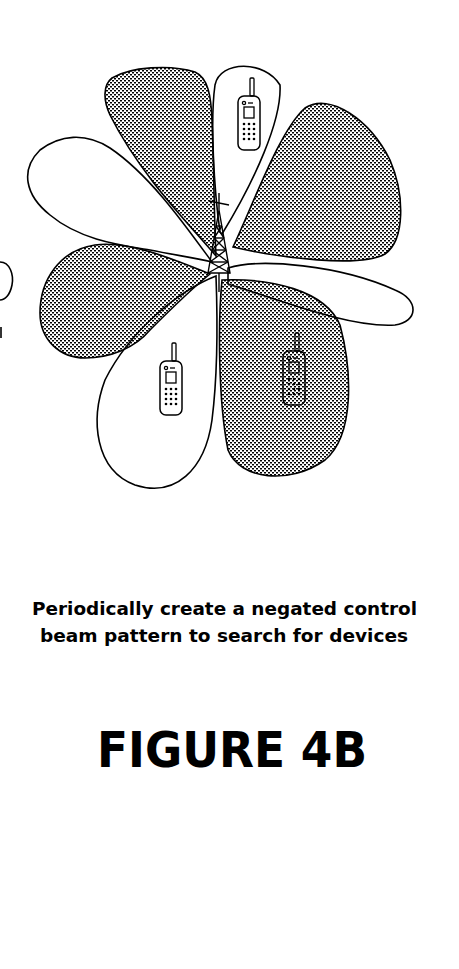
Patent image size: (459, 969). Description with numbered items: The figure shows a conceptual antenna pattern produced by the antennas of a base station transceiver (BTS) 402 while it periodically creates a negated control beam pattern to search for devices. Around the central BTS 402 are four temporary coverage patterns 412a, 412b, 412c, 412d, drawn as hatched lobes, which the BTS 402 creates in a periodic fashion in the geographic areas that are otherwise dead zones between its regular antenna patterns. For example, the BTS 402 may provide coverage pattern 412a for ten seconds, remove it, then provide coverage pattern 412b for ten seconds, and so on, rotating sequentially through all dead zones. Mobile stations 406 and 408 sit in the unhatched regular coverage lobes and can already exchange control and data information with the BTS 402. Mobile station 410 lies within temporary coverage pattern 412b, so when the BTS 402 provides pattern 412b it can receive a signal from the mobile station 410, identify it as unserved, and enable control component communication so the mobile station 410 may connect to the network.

The base station transceiver (BTS) 402 is at (233, 248).
The mobile station 406 is at (160, 407).
The mobile station 408 is at (260, 107).
The mobile station 410 is at (283, 400).
The temporary coverage pattern 412a is at (363, 118).
The temporary coverage pattern 412b is at (323, 457).
The temporary coverage pattern 412c is at (83, 360).
The temporary coverage pattern 412d is at (162, 68).